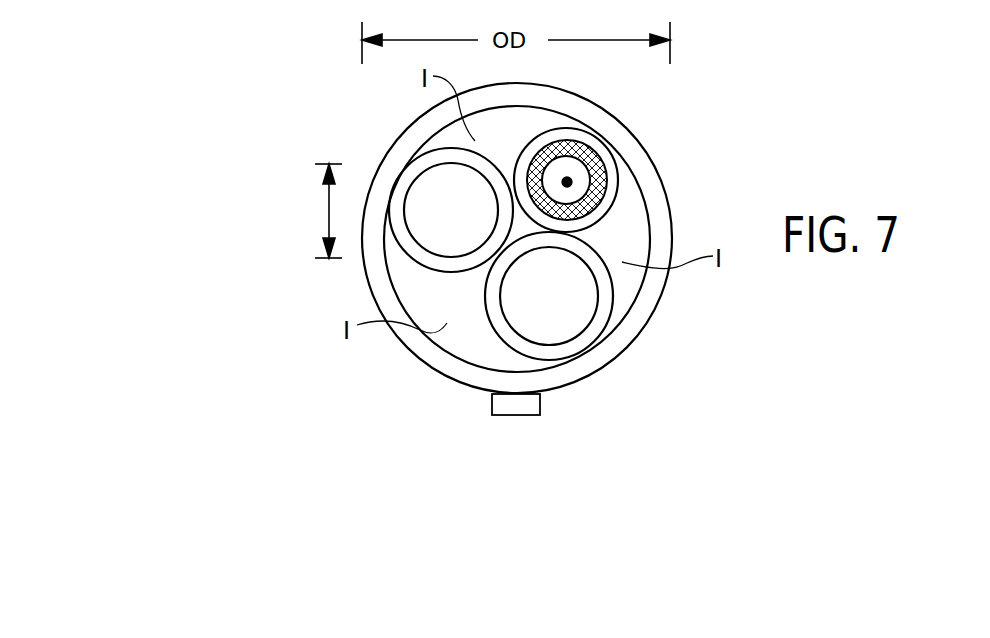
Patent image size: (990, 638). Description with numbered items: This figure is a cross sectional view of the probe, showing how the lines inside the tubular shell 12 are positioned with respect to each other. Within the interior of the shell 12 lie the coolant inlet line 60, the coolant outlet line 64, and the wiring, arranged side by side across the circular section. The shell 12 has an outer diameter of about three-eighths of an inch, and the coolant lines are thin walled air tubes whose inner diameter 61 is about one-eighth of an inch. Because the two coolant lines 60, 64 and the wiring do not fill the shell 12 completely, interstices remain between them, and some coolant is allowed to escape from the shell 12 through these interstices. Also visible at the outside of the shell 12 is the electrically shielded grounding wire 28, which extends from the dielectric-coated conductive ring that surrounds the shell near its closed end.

The shell 12 is at (660, 169).
The electrically shielded grounding wire 28 is at (541, 403).
The coolant inlet line 60 is at (425, 163).
The inner diameter 61 is at (316, 211).
The coolant outlet line 64 is at (600, 302).